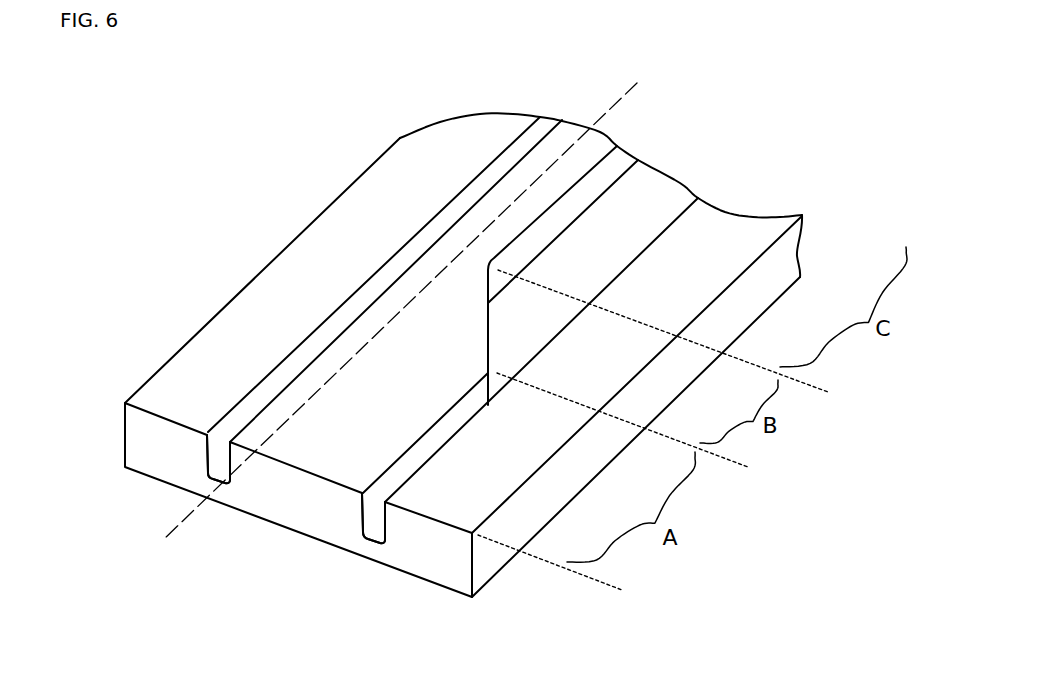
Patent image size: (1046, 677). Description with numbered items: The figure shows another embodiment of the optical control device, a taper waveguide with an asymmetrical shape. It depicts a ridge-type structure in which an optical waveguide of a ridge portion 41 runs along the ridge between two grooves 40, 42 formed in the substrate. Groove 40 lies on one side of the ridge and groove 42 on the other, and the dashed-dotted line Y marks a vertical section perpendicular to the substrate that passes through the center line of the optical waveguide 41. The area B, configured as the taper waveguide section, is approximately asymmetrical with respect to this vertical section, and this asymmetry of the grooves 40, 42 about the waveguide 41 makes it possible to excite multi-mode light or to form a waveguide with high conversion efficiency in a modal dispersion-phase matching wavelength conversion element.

The groove 40 is at (343, 313).
The optical waveguide of a ridge portion 41 is at (323, 438).
The groove 42 is at (637, 210).